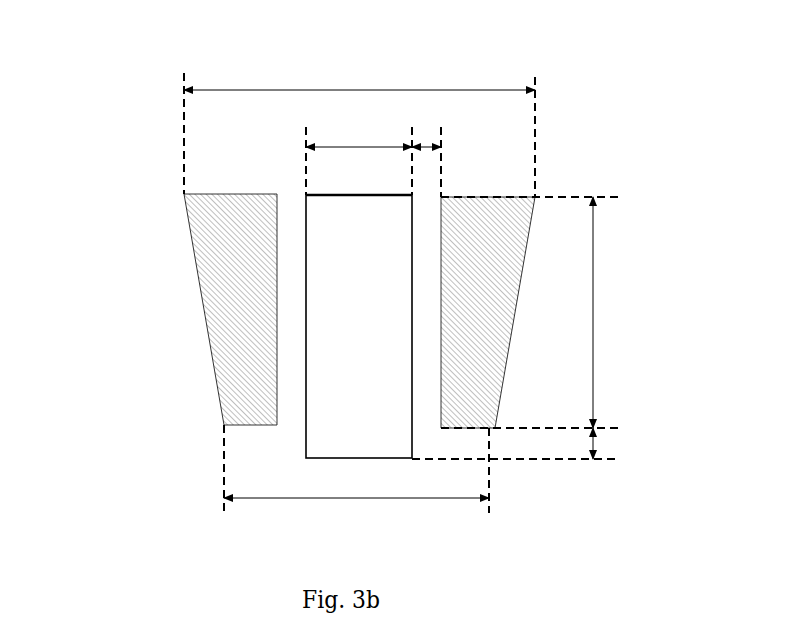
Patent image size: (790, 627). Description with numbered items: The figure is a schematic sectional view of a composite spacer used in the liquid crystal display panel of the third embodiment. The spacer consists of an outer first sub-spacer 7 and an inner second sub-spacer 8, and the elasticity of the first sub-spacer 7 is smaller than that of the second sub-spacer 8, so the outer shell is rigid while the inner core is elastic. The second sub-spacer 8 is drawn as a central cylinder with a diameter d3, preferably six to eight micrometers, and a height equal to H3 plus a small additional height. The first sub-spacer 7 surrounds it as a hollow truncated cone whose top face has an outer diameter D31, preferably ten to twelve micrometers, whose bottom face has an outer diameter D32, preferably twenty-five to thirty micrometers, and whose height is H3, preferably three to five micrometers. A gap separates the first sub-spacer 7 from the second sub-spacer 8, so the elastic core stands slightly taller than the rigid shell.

The first sub-spacer 7 is at (301, 311).
The second sub-spacer 8 is at (239, 299).
The outer diameter of bottom face D32 is at (359, 68).
The diameter of second sub-spacer d3 is at (359, 125).
The height of first sub-spacer H3 is at (628, 312).
The outer diameter of top face D31 is at (356, 527).